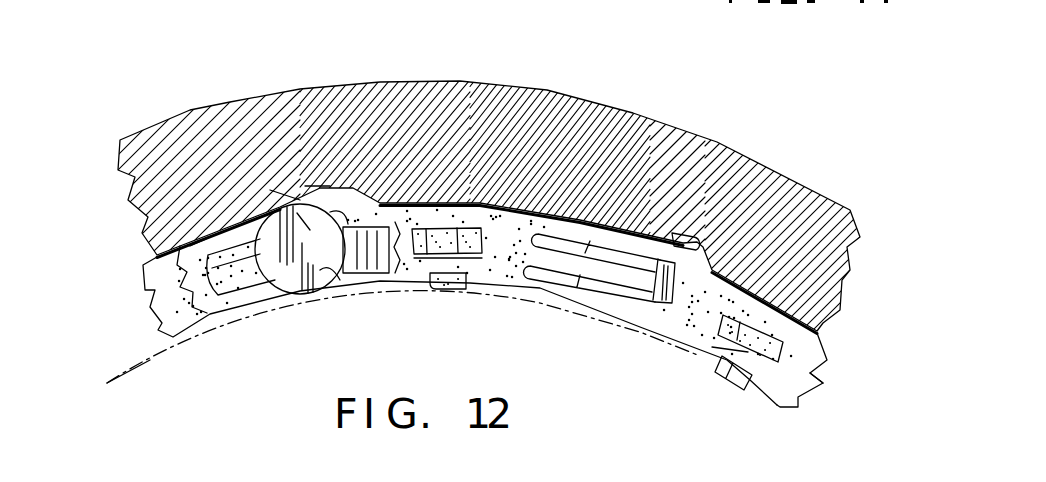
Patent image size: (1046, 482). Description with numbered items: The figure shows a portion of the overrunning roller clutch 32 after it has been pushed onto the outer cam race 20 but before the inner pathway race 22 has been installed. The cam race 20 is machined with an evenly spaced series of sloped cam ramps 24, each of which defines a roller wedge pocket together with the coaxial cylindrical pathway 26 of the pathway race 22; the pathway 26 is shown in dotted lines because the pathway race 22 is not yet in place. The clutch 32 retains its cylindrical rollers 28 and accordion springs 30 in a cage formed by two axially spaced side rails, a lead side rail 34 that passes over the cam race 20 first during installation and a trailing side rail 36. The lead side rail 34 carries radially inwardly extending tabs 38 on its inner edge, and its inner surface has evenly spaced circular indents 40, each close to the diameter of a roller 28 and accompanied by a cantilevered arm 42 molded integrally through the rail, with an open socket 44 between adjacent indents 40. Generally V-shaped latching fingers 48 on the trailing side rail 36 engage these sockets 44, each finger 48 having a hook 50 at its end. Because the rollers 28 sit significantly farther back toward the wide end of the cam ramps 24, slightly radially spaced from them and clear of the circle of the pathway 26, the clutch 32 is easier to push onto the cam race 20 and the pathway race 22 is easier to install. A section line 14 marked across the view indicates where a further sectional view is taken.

The section line 14- 14 is at (450, 60).
The cam race 20 is at (804, 175).
The pathway race 22 is at (110, 372).
The cam ramps 24 is at (317, 187).
The cylindrical pathway 26 is at (147, 357).
The roller 28 is at (287, 203).
The spring 30 is at (368, 276).
The overrunning roller clutch 32 is at (847, 349).
The lead side rail 34 is at (814, 379).
The trailing side rail 36 is at (198, 238).
The radially inwardly extending tabs 38 is at (462, 288).
The indents 40 is at (322, 278).
The cantilevered arm 42 is at (229, 369).
The open socket 44 is at (457, 220).
The latching fingers 48 is at (415, 226).
The hook 50 is at (443, 256).